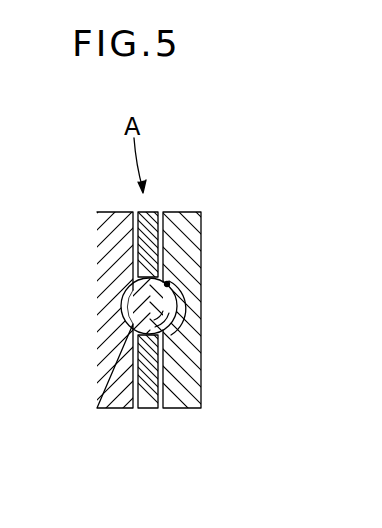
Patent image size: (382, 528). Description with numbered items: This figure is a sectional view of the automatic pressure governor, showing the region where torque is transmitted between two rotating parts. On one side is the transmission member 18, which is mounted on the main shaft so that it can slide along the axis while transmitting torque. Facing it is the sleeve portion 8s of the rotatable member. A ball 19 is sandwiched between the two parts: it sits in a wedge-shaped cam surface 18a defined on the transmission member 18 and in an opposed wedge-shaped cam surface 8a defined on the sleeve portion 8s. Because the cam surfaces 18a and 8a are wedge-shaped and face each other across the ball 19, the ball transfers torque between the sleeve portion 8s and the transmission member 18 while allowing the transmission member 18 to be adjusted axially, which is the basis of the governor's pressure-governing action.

The ball 19 is at (128, 289).
The transmission member 18 is at (116, 397).
The wedge-shaped cam surface 18a is at (121, 332).
The sleeve portion 8s is at (192, 397).
The wedge-shaped cam surface 8a is at (170, 283).